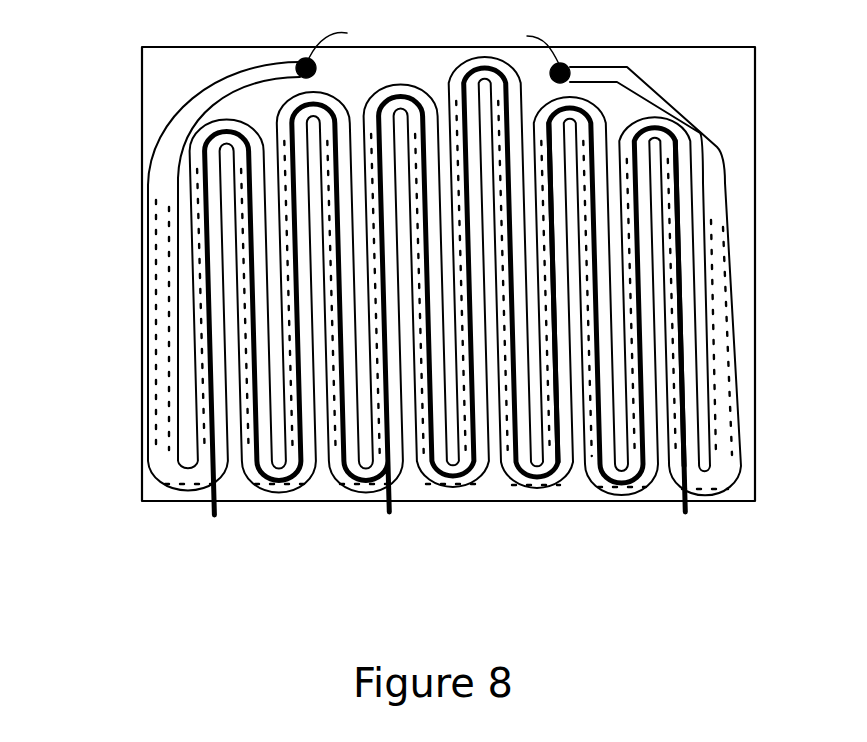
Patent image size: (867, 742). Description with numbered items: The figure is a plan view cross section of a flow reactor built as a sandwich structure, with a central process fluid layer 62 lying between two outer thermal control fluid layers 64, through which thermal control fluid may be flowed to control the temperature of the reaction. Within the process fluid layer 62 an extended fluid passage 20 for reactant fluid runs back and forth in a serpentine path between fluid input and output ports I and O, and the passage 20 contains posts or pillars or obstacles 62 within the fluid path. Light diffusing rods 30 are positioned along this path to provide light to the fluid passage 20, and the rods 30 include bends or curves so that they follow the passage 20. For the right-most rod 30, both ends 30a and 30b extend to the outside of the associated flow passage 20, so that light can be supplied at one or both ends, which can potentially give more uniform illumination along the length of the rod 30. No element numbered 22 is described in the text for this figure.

The extended fluid passage 20 is at (172, 147).
The fluid conduit with inlet and outlet 22 is at (192, 102).
The light diffusing rods 30 is at (222, 525).
The end of light diffusing rod 30a is at (558, 462).
The end of light diffusing rod 30b is at (684, 466).
The process fluid layer 62 is at (168, 282).
The thermal control fluid layers 64 is at (336, 610).